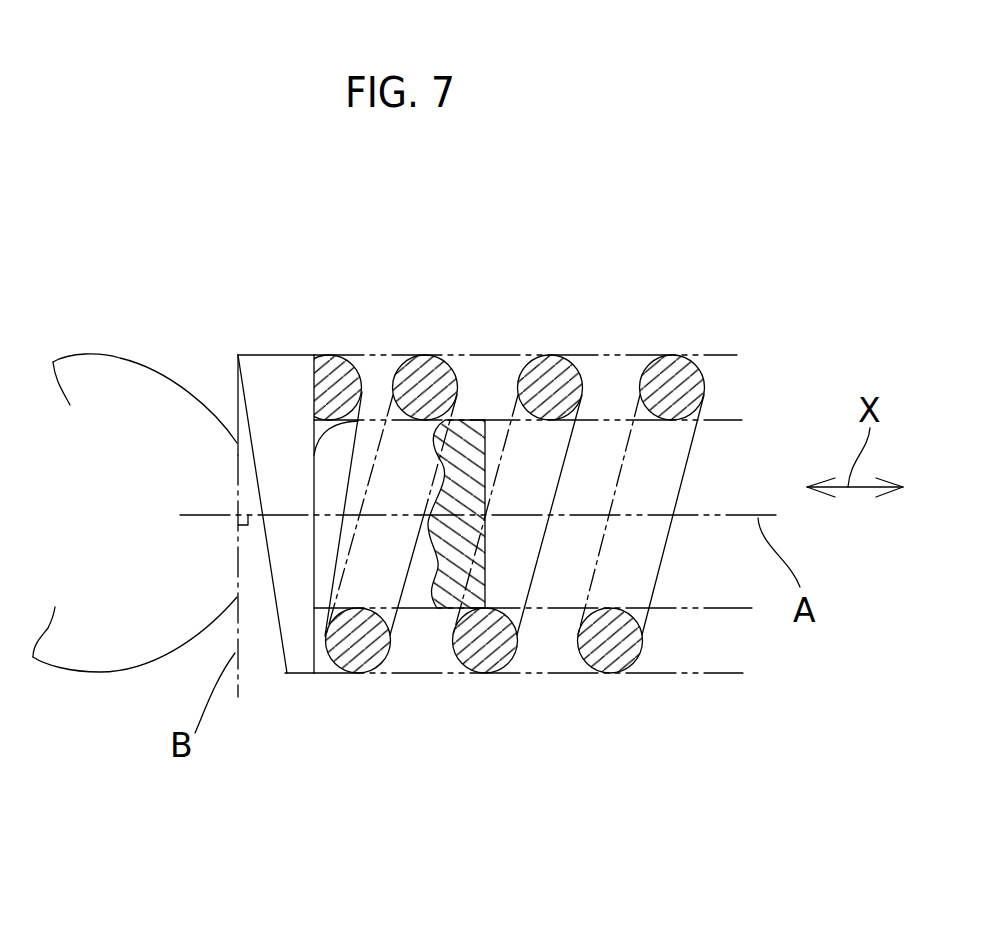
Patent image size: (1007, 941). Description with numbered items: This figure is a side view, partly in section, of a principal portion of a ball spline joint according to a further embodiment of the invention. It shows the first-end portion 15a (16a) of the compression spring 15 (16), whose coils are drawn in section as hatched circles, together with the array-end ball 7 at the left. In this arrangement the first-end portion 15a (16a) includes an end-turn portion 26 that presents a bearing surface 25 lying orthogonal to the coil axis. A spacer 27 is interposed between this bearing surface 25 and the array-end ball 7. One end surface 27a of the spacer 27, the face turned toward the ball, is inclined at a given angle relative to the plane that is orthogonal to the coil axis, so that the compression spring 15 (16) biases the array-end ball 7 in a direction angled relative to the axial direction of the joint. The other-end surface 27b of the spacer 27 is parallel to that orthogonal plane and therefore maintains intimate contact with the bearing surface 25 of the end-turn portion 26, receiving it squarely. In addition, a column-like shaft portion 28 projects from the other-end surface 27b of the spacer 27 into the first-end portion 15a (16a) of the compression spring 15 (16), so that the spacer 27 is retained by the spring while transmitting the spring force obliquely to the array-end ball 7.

The array-end ball 7 is at (108, 672).
The bearing surface 25 is at (314, 387).
The end-turn portion 26 is at (362, 375).
The spacer 27 is at (250, 355).
The one end surface 27a is at (252, 445).
The other-end surface 27b is at (317, 660).
The column-like shaft portion 28 is at (455, 420).
The compression spring 15 is at (548, 355).
The compression spring 16 is at (641, 418).
The first-end portion 15a is at (392, 672).
The first-end portion 16a is at (570, 685).